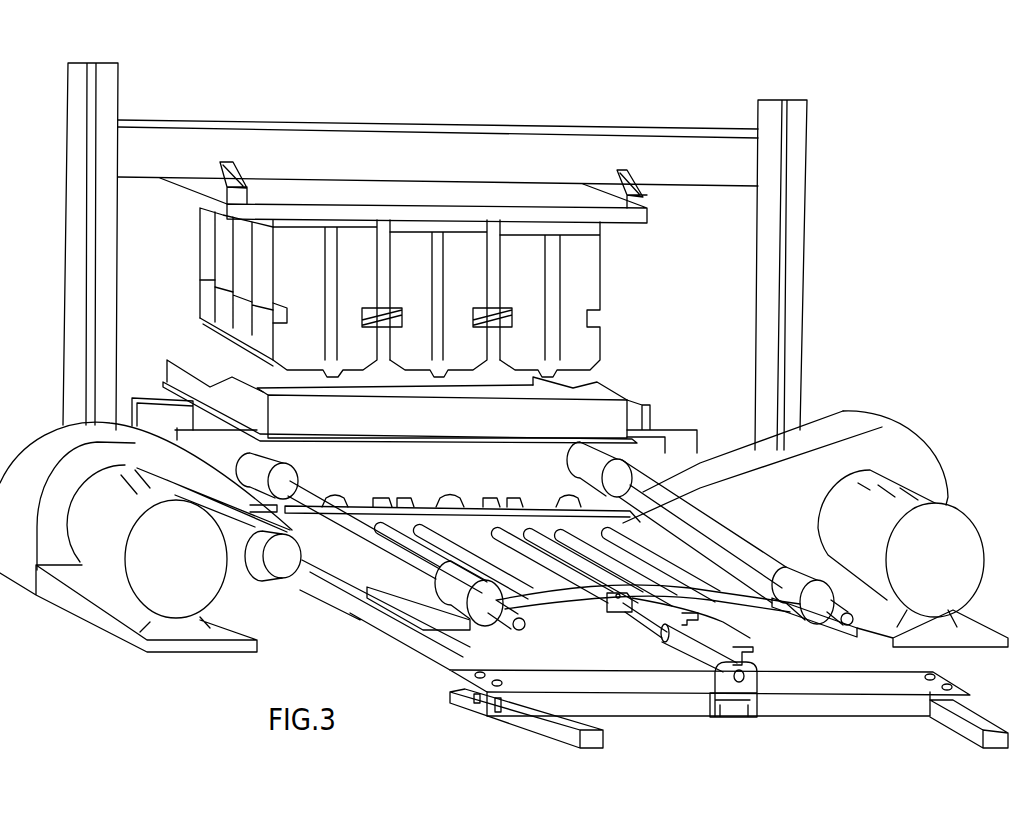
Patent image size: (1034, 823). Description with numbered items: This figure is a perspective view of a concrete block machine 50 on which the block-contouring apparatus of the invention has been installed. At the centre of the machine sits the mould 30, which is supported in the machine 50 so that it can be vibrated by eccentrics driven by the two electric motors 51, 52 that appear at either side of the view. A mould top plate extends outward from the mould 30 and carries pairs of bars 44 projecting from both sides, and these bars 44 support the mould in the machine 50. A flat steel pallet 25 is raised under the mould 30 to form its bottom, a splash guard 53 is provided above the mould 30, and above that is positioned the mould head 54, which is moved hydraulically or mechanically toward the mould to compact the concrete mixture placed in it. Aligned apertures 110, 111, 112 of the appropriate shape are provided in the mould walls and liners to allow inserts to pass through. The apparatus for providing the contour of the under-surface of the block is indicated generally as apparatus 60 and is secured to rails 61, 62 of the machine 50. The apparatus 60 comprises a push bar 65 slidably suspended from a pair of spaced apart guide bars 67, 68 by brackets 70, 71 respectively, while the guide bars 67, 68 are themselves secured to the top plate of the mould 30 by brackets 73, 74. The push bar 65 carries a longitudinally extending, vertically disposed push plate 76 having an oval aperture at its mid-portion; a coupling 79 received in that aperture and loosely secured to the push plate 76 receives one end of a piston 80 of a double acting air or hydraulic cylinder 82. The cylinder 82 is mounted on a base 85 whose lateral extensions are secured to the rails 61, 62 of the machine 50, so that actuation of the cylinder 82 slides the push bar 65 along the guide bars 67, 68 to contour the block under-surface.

The concrete block machine 50 is at (730, 272).
The mould head 54 is at (609, 328).
The splash guard 53 is at (611, 412).
The mould 30 is at (427, 455).
The bars 44 is at (657, 441).
The aperture 110 is at (398, 494).
The aperture 111 is at (440, 494).
The aperture 112 is at (494, 497).
The bracket 73 is at (246, 468).
The guide bar 67 is at (360, 531).
The bracket 74 is at (568, 465).
The guide bar 68 is at (743, 550).
The apparatus 60 is at (605, 536).
The bracket 70 is at (440, 588).
The bracket 71 is at (815, 592).
The pallet 25 is at (357, 594).
The electric motor 51 is at (183, 589).
The electric motor 52 is at (950, 586).
The push plate 76 is at (544, 611).
The push bar 65 is at (575, 625).
The coupling 79 is at (733, 657).
The piston 80 is at (622, 618).
The cylinder 82 is at (690, 648).
The base 85 is at (715, 711).
The rail 61 is at (553, 721).
The rail 62 is at (970, 716).